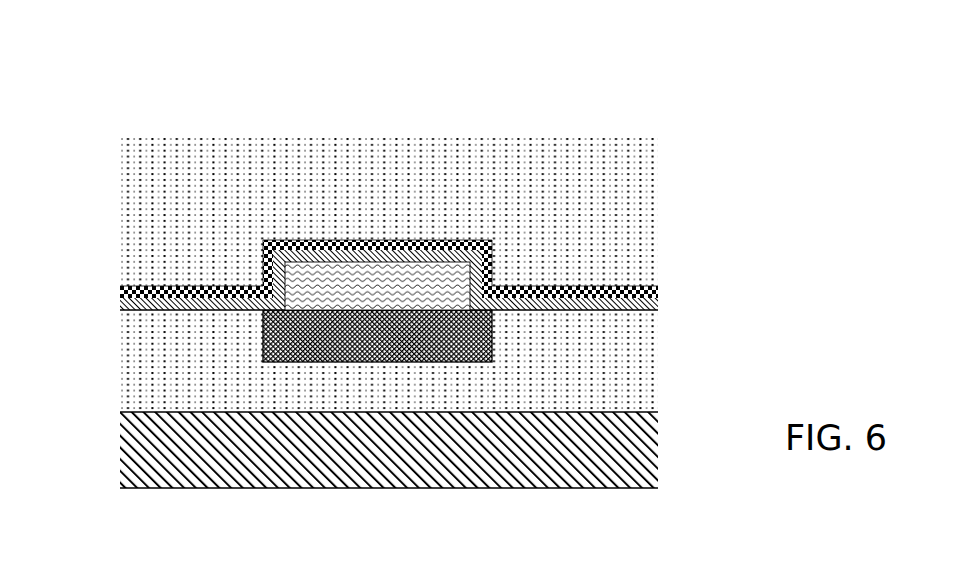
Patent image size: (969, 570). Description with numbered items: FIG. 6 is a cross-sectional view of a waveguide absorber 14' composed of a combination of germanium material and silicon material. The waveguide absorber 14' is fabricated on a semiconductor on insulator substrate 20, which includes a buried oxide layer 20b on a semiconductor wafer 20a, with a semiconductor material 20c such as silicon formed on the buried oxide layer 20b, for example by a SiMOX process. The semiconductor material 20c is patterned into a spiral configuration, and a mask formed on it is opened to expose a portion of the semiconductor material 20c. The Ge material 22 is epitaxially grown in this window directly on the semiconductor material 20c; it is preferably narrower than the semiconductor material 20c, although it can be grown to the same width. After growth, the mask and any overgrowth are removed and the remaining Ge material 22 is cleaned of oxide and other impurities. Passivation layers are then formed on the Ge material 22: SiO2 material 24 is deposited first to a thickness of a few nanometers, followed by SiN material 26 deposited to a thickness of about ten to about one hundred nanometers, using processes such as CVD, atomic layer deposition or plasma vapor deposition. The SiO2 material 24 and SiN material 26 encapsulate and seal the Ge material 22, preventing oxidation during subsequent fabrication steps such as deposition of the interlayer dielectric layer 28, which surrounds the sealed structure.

The waveguide absorber 14' is at (70, 45).
The semiconductor on insulator substrate 20 is at (357, 427).
The semiconductor wafer 20a is at (203, 468).
The buried oxide (BOX) layer 20b is at (327, 412).
The semiconductor material 20c is at (407, 350).
The Ge material 22 is at (337, 287).
The SiO2 material 24 is at (122, 303).
The SiN material 26 is at (132, 287).
The interlayer dielectric layer 28 is at (122, 200).